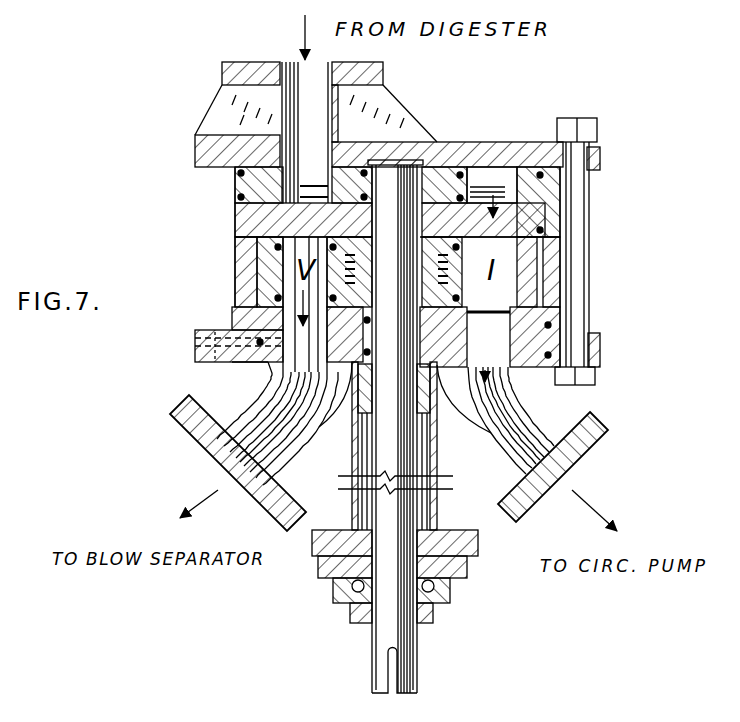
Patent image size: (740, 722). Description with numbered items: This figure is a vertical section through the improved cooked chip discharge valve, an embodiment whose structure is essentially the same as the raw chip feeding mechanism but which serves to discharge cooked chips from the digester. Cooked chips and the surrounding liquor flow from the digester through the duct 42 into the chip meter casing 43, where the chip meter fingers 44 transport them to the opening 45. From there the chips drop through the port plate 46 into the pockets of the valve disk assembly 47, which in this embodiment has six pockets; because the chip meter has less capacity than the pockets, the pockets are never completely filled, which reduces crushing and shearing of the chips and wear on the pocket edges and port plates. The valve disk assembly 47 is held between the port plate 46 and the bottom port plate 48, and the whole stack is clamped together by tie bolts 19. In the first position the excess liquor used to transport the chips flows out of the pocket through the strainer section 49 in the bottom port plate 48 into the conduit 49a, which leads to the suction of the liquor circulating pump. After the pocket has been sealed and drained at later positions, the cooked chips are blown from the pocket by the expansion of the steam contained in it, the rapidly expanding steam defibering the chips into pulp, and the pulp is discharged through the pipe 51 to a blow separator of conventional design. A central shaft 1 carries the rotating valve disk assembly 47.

The shaft 1 is at (419, 675).
The tie bolts 19 is at (590, 202).
The duct 42 is at (273, 112).
The chip meter casing 43 is at (252, 186).
The chip meter fingers 44 is at (330, 189).
The opening 45 is at (512, 218).
The port plate 46 is at (500, 223).
The valve disk assembly 47 is at (620, 240).
The bottom port plate 48 is at (545, 318).
The strainer section 49 is at (515, 368).
The conduit 49a is at (600, 436).
The pipe 51 is at (190, 436).